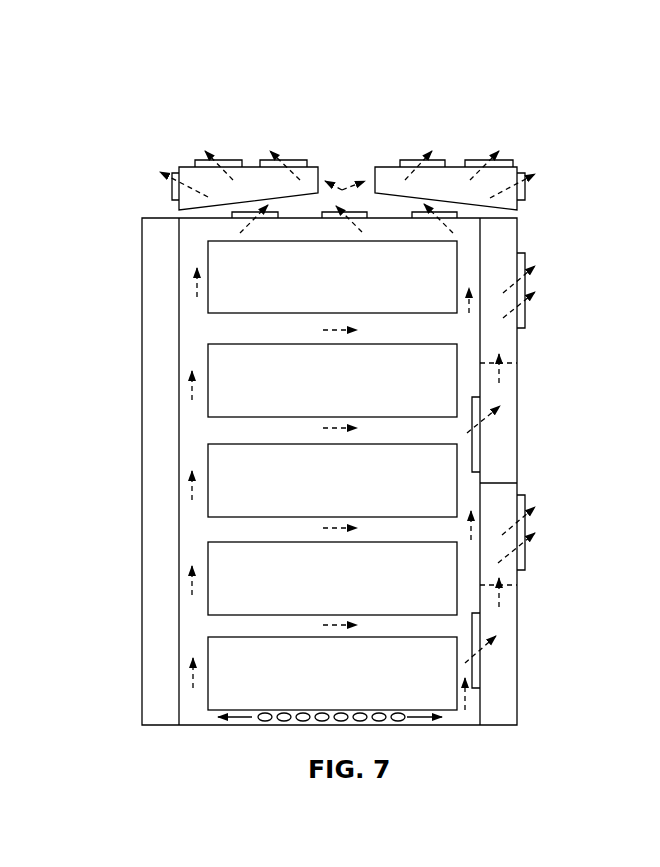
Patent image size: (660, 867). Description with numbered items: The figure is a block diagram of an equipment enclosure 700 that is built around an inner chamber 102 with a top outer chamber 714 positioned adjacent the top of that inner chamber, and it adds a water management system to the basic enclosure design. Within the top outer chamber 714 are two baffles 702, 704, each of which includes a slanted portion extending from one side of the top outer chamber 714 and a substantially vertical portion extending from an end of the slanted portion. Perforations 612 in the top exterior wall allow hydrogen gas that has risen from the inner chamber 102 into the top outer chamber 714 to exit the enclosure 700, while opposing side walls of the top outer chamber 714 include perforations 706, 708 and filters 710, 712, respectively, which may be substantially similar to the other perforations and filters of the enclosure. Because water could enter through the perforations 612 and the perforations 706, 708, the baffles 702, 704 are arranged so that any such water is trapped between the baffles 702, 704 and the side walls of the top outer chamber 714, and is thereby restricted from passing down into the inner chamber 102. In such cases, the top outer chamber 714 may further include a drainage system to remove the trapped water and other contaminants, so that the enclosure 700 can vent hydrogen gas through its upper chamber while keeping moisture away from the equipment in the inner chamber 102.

The equipment enclosure 700 is at (137, 72).
The inner chamber 102 is at (185, 288).
The perforations 612 is at (237, 161).
The baffle 702 is at (293, 198).
The baffle 704 is at (503, 208).
The perforations 706 is at (173, 178).
The perforations 708 is at (513, 172).
The filter 710 is at (172, 193).
The filter 712 is at (525, 192).
The top outer chamber 714 is at (337, 177).